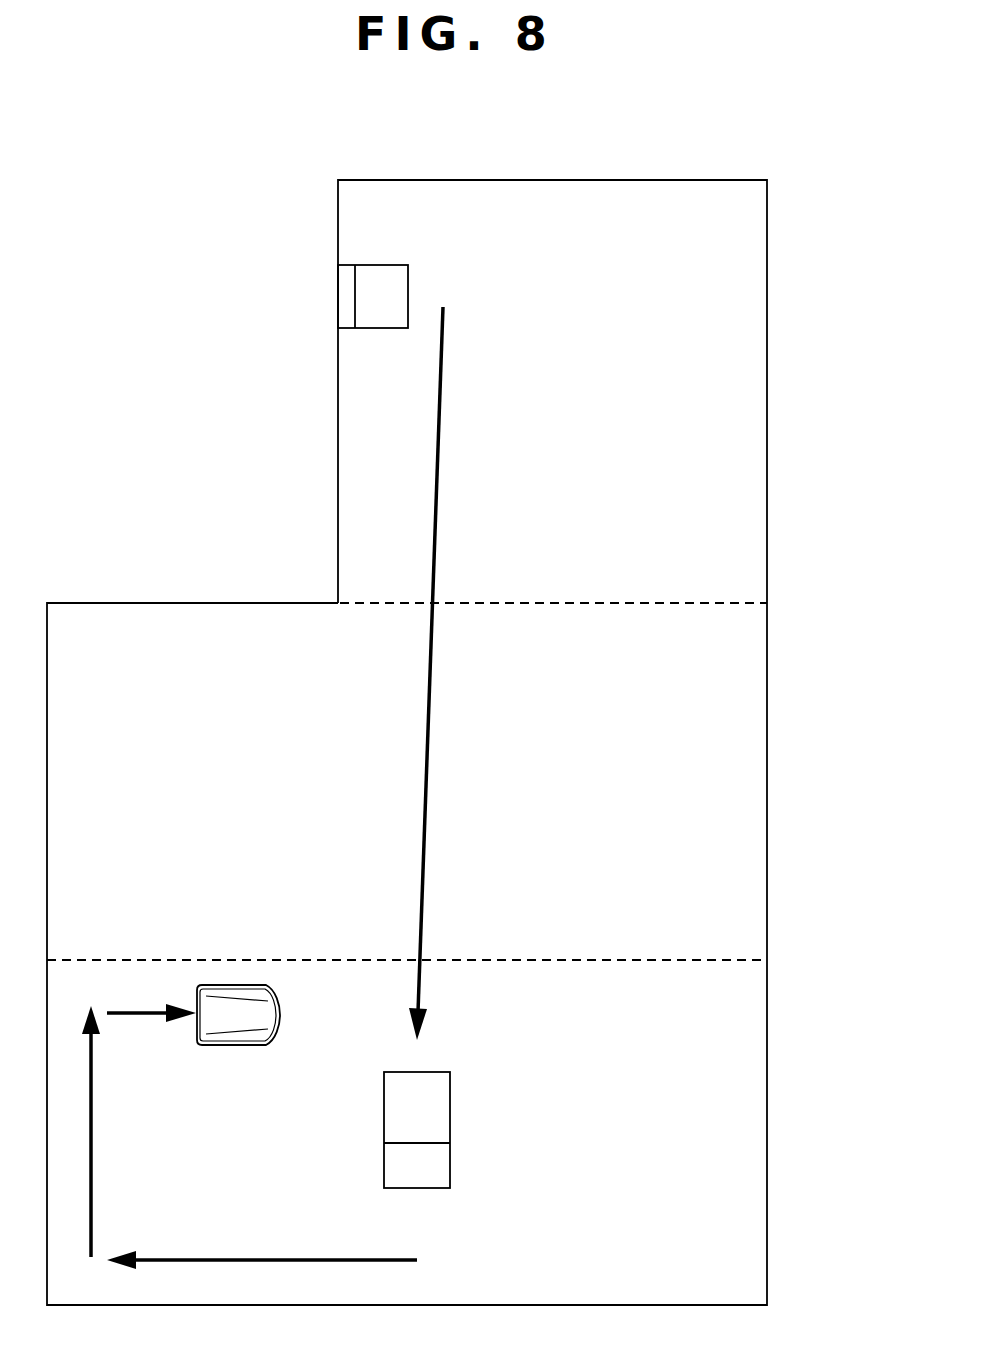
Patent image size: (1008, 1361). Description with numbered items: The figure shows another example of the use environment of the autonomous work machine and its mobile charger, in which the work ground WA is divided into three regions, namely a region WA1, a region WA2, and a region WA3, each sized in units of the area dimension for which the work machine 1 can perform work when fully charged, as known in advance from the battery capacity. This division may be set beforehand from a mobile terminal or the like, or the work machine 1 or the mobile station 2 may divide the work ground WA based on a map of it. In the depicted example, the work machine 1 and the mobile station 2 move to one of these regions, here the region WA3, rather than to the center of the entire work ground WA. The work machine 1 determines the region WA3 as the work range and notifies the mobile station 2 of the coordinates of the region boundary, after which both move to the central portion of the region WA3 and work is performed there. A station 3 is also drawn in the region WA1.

The work ground WA is at (461, 715).
The region WA1 is at (767, 362).
The region WA2 is at (767, 782).
The region WA3 is at (767, 1120).
The work machine 1 is at (282, 1013).
The mobile station 2 is at (425, 1072).
The station 3 is at (378, 265).